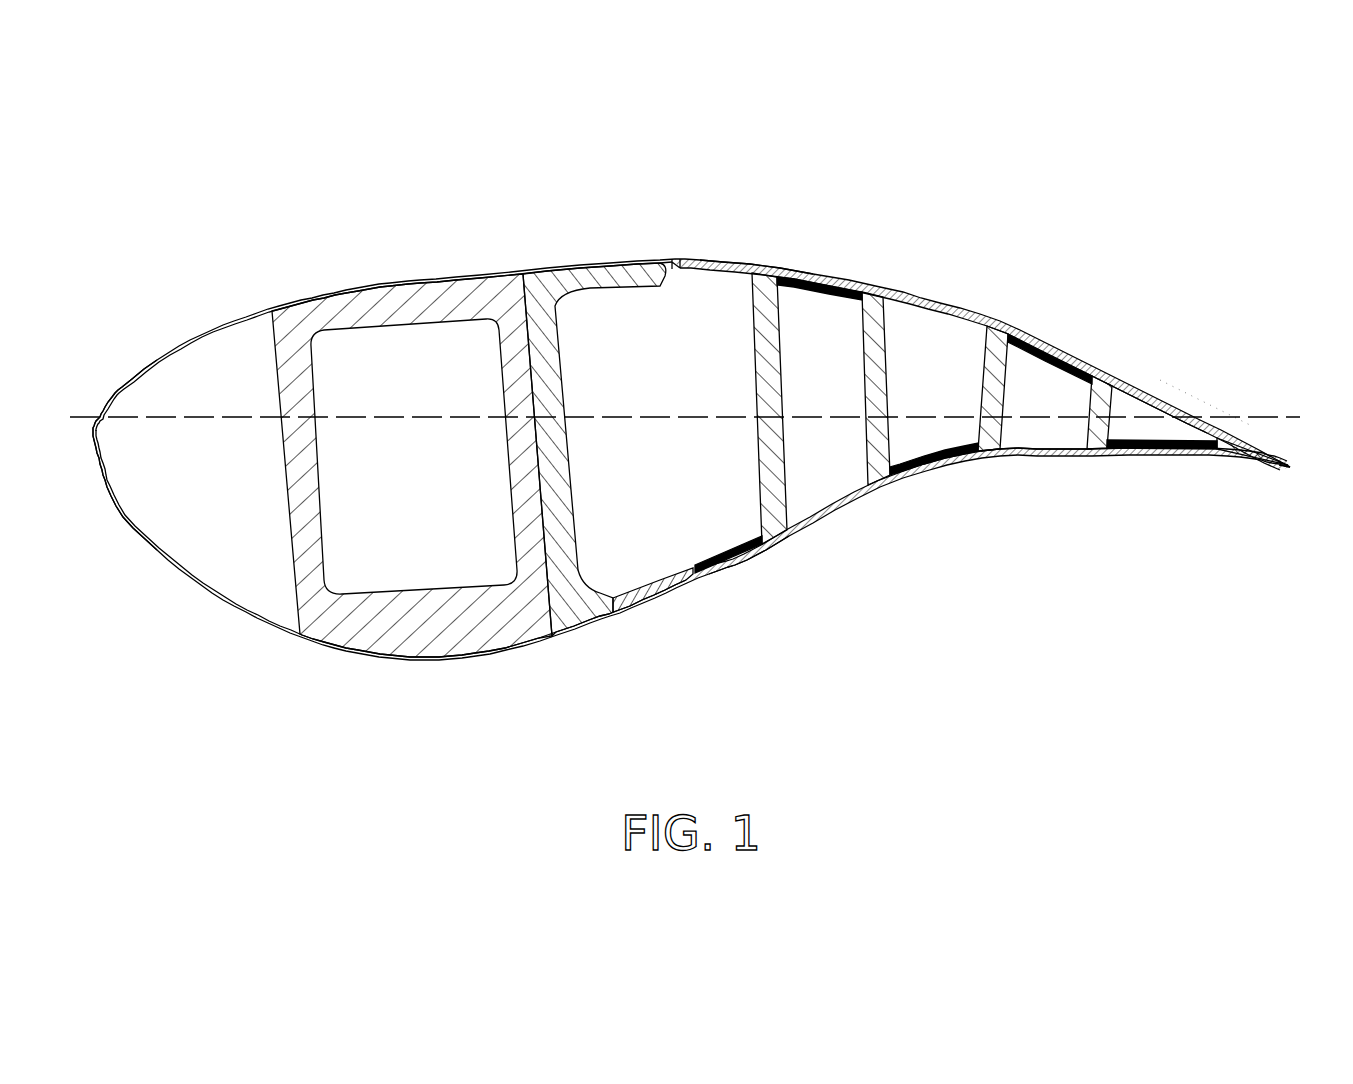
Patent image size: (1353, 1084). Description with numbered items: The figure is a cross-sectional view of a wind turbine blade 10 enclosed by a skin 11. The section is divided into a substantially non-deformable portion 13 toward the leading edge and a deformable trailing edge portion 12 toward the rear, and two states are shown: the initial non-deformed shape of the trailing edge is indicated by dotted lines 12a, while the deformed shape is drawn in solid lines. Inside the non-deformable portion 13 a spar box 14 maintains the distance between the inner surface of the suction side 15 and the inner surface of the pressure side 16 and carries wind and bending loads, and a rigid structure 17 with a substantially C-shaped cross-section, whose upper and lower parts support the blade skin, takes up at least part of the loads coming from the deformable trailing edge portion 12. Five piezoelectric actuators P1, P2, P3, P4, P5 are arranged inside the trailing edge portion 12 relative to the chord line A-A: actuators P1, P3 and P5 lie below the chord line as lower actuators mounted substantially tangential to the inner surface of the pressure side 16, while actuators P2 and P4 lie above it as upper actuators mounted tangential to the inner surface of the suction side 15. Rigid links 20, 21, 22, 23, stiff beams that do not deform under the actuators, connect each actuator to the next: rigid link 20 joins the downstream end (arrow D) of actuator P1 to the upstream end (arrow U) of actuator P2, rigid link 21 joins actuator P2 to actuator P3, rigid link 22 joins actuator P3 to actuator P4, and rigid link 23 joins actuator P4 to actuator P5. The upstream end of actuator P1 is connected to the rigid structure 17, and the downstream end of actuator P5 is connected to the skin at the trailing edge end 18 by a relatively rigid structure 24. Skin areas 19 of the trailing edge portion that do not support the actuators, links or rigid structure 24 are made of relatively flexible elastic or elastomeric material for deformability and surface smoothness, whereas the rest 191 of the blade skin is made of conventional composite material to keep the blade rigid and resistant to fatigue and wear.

The wind turbine blade 10 is at (240, 653).
The skin 11 is at (121, 385).
The deformable trailing edge portion 12 is at (673, 223).
The dotted lines 12a is at (1192, 383).
The substantially non-deformable portion 13 is at (107, 253).
The spar box 14 is at (427, 645).
The suction side 15 is at (1160, 288).
The pressure side 16 is at (1028, 588).
The rigid structure 17 is at (598, 608).
The trailing edge end 18 is at (1290, 467).
The skin areas 19 is at (680, 265).
The rest of the blade skin 191 is at (1027, 323).
The rigid link 20 is at (780, 480).
The rigid link 21 is at (880, 384).
The rigid link 22 is at (1010, 452).
The rigid link 23 is at (1093, 452).
The rigid structure 24 is at (1247, 457).
The piezoelectric actuator P1 is at (725, 563).
The piezoelectric actuator P2 is at (840, 285).
The piezoelectric actuator P3 is at (963, 458).
The piezoelectric actuator P4 is at (1085, 366).
The piezoelectric actuator P5 is at (1187, 453).
The arrow U is at (788, 272).
The arrow D is at (753, 562).
The chord line A- A is at (691, 403).